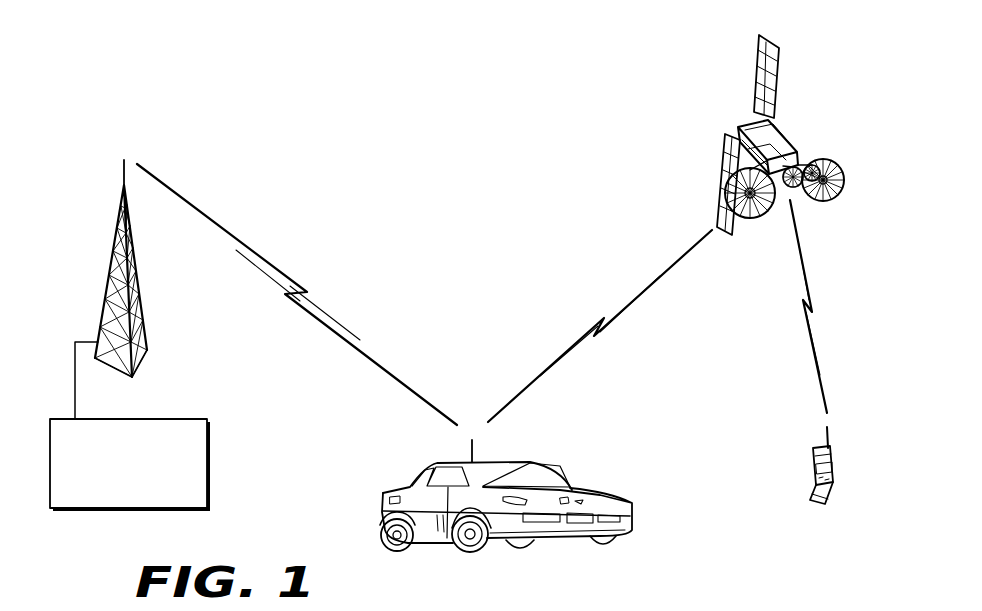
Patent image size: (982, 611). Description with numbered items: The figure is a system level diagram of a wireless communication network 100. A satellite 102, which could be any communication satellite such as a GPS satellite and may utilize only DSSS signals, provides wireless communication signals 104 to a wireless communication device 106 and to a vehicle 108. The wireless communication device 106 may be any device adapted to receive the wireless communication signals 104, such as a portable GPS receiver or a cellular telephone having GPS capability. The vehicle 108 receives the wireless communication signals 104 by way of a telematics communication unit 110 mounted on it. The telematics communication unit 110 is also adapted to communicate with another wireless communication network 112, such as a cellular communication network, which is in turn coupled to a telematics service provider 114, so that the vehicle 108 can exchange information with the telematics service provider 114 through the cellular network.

The wireless communication network 100 is at (104, 563).
The satellite 102 is at (722, 148).
The wireless communication signals 104 is at (655, 283).
The wireless communication device 106 is at (835, 468).
The vehicle 108 is at (598, 487).
The telematics communication unit 110 is at (471, 455).
The wireless communication network 112 is at (138, 296).
The telematics service provider 114 is at (211, 471).